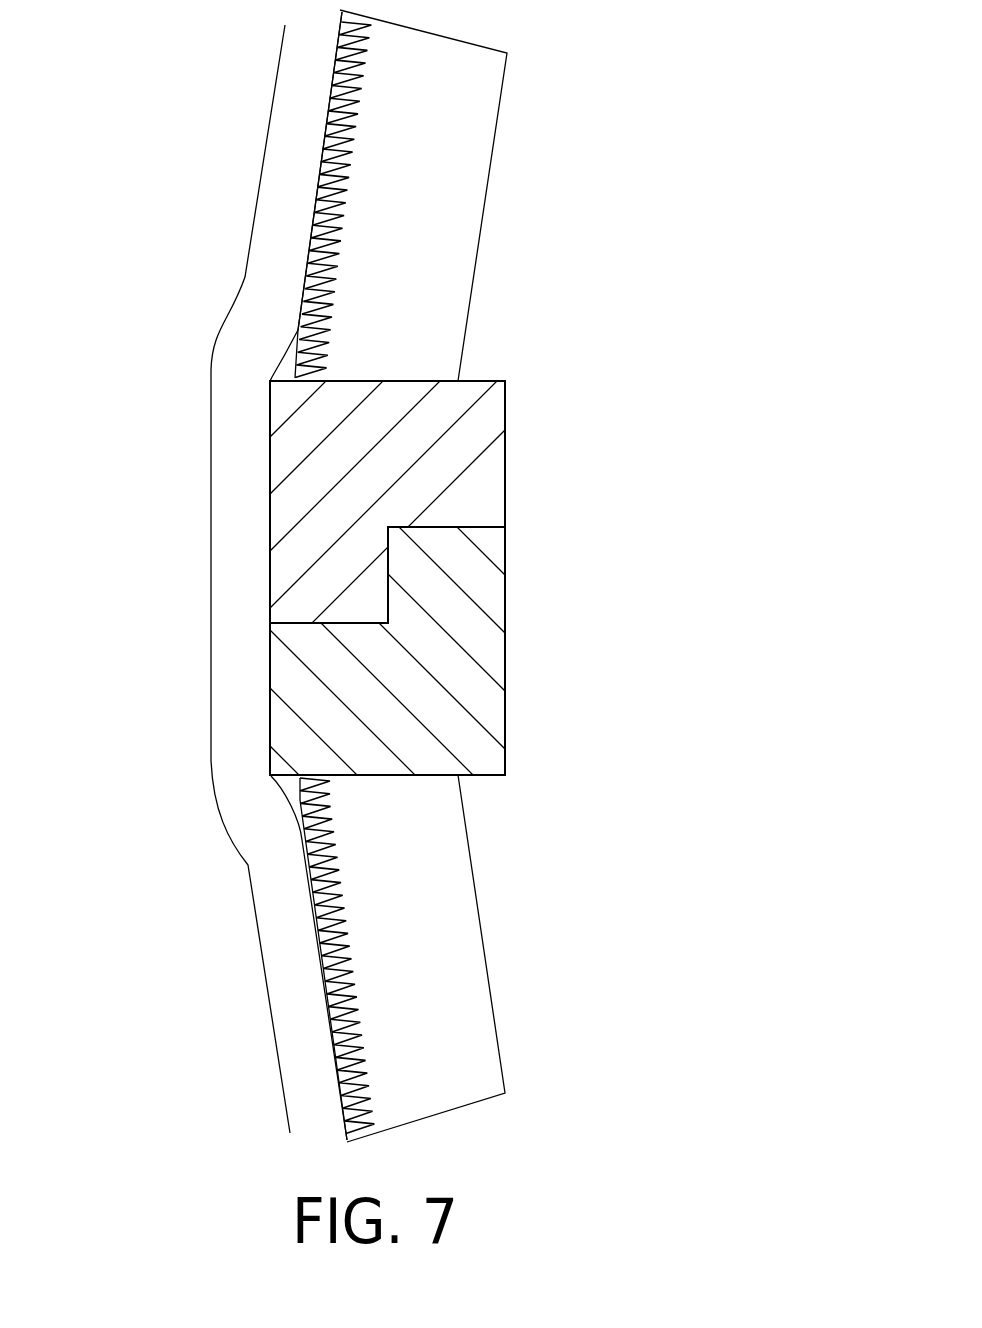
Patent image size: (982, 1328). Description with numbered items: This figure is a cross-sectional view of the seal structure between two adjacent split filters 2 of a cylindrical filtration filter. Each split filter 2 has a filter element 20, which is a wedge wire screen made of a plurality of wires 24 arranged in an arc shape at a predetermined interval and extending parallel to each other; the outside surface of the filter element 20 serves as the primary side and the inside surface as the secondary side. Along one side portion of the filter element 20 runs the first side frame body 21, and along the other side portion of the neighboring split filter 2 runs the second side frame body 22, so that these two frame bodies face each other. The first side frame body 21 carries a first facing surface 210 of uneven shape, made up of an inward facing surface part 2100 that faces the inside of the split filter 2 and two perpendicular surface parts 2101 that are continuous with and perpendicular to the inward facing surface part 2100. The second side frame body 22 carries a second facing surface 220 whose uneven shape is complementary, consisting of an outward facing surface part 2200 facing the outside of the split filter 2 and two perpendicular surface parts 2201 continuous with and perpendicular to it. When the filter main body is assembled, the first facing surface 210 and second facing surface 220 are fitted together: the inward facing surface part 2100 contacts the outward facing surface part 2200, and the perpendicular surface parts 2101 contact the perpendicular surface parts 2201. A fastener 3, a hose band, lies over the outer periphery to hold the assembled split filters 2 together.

The split filter 2 is at (543, 91).
The fastener 3 is at (268, 233).
The filter element 20 is at (337, 268).
The first side frame body 21 is at (497, 413).
The second side frame body 22 is at (477, 760).
The wire 24 is at (347, 133).
The first facing surface 210 is at (387, 565).
The inward facing surface part 2100 is at (387, 539).
The perpendicular surface part 2101 is at (370, 620).
The second facing surface 220 is at (390, 577).
The outward facing surface part 2200 is at (390, 602).
The perpendicular surface part 2201 is at (443, 528).